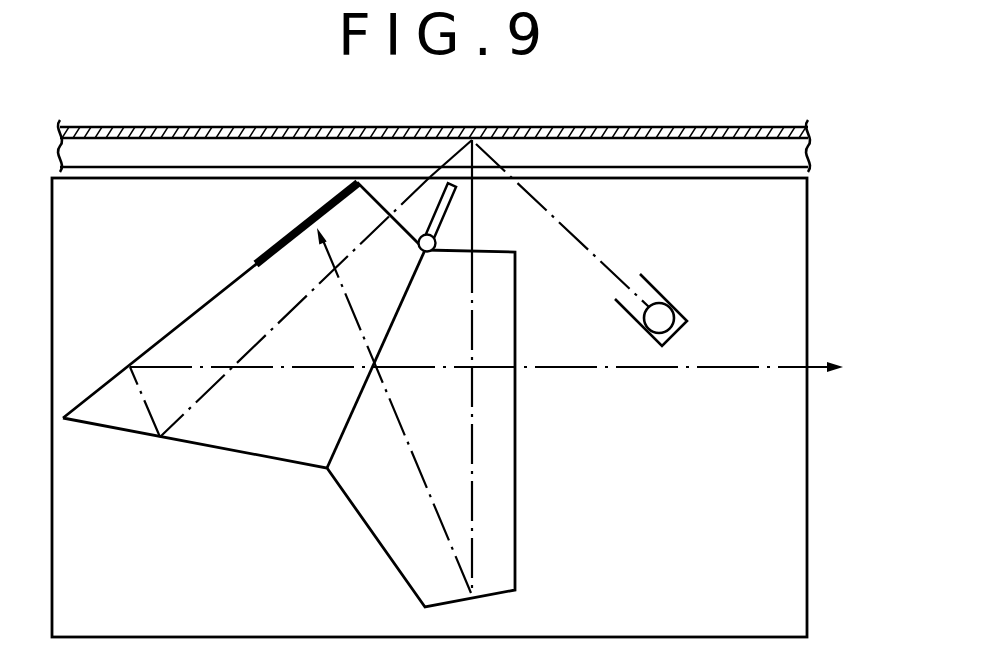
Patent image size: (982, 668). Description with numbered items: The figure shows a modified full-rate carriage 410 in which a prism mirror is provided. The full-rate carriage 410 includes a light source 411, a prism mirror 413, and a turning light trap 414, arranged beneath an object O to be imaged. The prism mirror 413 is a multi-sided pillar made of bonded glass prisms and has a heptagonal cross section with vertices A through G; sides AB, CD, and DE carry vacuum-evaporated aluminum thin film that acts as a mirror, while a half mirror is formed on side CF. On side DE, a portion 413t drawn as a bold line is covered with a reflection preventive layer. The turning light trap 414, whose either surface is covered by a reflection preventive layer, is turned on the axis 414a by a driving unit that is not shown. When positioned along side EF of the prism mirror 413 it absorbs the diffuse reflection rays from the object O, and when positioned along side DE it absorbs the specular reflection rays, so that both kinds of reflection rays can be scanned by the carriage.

The object to be imaged O is at (732, 125).
The full-rate carriage 410 is at (807, 245).
The light source 411 is at (678, 322).
The prism mirror 413 is at (377, 540).
The portion covered with reflection preventive layer 413t is at (285, 238).
The turning light trap 414 is at (444, 207).
The axis 414a is at (432, 252).